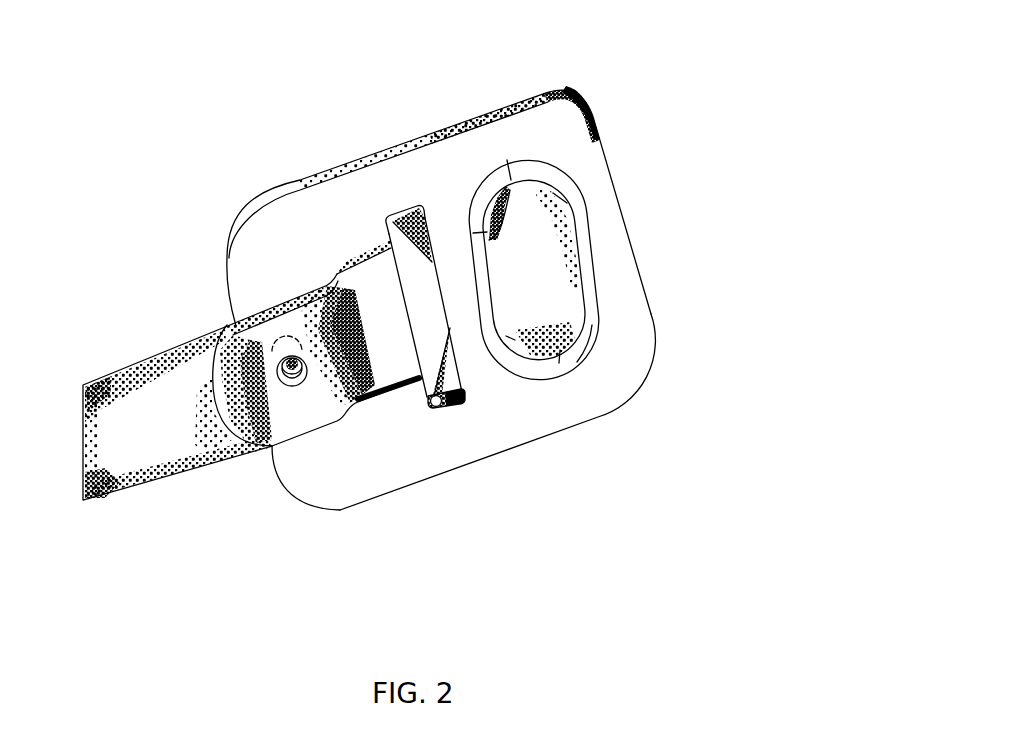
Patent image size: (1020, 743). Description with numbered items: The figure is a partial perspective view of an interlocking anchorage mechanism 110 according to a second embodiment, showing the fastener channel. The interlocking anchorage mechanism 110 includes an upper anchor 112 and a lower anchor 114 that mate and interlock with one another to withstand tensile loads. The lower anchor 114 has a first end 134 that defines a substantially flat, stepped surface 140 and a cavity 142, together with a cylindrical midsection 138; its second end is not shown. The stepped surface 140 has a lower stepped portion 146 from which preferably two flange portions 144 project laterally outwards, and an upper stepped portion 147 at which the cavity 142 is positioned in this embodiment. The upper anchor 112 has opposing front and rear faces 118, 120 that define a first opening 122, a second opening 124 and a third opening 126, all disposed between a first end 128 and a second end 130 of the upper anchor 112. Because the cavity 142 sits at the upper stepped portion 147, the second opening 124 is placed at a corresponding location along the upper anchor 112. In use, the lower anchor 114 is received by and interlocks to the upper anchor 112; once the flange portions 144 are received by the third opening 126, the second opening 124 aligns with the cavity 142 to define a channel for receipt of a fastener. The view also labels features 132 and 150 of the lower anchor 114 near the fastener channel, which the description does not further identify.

The interlocking anchorage mechanism 110 is at (568, 572).
The upper anchor 112 is at (666, 397).
The lower anchor 114 is at (168, 519).
The front face 118 is at (565, 117).
The rear face 120 is at (570, 80).
The first opening 122 is at (494, 193).
The second opening 124 is at (284, 334).
The third opening 126 is at (386, 221).
The first end 128 is at (263, 462).
The second end 130 is at (654, 321).
The lower surface 132 is at (387, 412).
The first end 134 is at (500, 355).
The cylindrical midsection 138 is at (88, 357).
The stepped surface 140 is at (281, 268).
The cavity 142 is at (276, 366).
The flange portions 144 is at (402, 212).
The lower stepped portion 146 is at (380, 327).
The upper stepped portion 147 is at (293, 423).
The channel bottom 150 is at (434, 404).